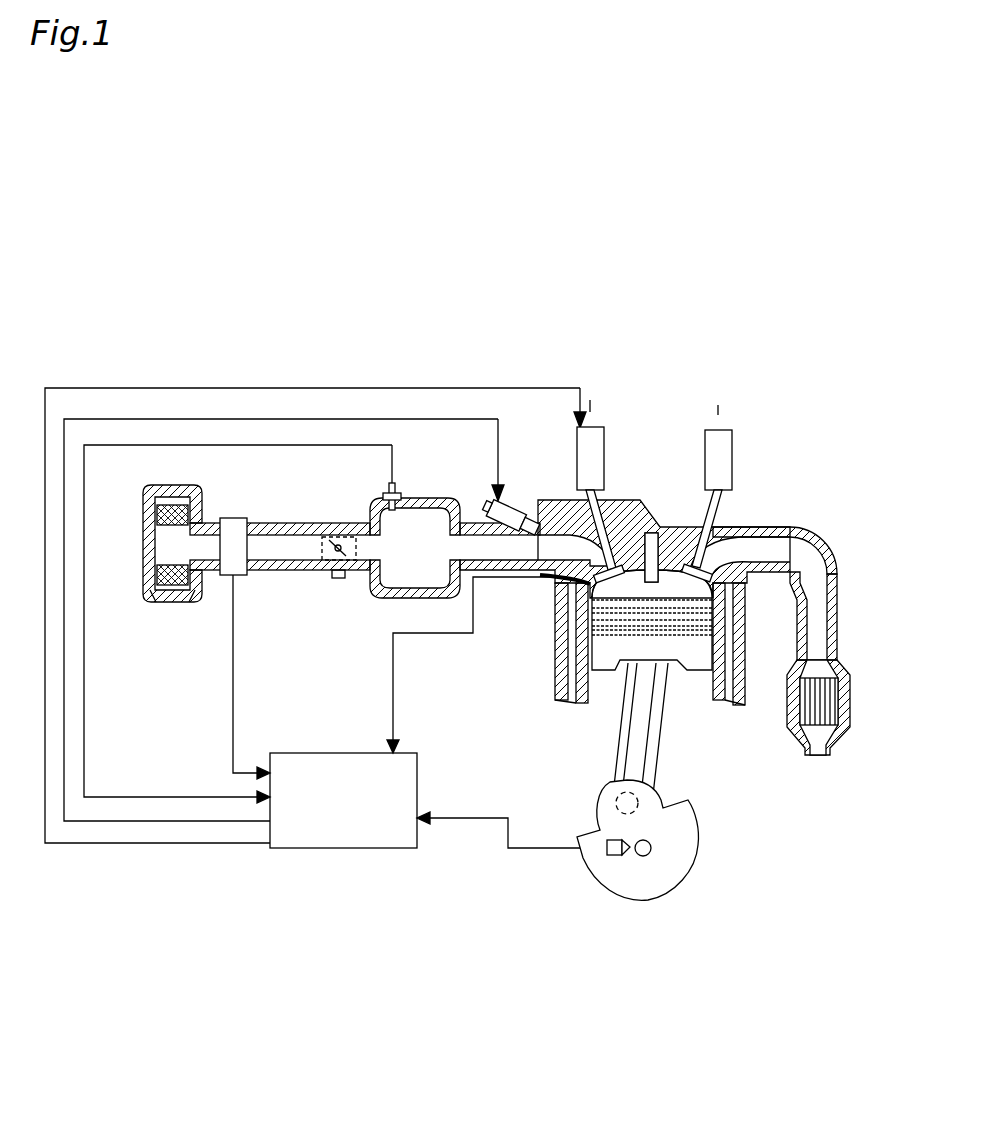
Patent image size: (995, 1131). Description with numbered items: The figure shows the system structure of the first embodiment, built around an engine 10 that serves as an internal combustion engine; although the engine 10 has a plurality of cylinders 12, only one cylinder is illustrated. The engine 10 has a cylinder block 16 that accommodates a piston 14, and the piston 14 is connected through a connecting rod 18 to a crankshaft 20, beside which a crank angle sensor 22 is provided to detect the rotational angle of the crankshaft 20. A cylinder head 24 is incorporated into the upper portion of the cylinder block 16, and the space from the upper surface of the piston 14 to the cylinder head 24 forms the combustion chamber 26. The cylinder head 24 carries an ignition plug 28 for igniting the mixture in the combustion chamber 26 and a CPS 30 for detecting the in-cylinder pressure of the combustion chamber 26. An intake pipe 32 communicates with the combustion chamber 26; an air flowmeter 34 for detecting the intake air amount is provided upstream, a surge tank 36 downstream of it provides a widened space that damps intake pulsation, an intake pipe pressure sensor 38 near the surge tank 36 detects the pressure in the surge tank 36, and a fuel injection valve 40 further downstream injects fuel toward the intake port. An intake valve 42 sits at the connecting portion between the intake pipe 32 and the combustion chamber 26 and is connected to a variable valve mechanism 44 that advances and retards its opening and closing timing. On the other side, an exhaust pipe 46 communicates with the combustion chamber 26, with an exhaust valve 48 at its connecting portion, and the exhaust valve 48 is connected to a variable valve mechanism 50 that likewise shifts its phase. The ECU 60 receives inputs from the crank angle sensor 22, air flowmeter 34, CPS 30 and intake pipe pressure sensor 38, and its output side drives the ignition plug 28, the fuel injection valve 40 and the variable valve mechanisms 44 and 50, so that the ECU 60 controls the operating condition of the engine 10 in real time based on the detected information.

The engine 10 is at (664, 654).
The cylinder 12 is at (540, 680).
The piston 14 is at (695, 668).
The cylinder block 16 is at (745, 688).
The connecting rod 18 is at (655, 758).
The crankshaft 20 is at (646, 856).
The crank angle sensor 22 is at (614, 856).
The cylinder head 24 is at (610, 530).
The combustion chamber 26 is at (640, 585).
The ignition plug 28 is at (652, 533).
The CPS 30 is at (540, 590).
The intake pipe 32 is at (322, 521).
The air flowmeter 34 is at (233, 518).
The surge tank 36 is at (455, 498).
The intake pipe pressure sensor 38 is at (397, 490).
The fuel injection valve 40 is at (522, 498).
The intake valve 42 is at (586, 505).
The variable valve mechanism 44 is at (598, 427).
The exhaust pipe 46 is at (825, 552).
The exhaust valve 48 is at (730, 510).
The variable valve mechanism 50 is at (720, 430).
The ECU 60 is at (410, 850).